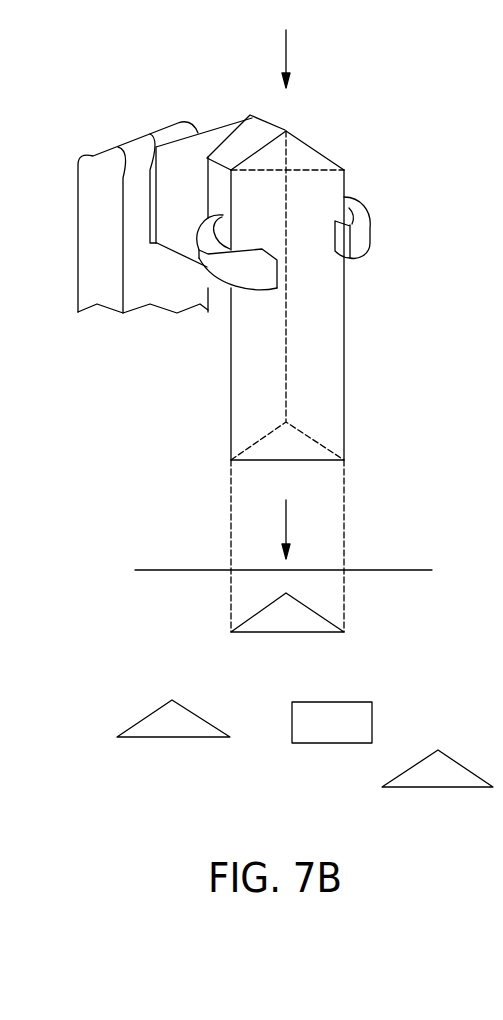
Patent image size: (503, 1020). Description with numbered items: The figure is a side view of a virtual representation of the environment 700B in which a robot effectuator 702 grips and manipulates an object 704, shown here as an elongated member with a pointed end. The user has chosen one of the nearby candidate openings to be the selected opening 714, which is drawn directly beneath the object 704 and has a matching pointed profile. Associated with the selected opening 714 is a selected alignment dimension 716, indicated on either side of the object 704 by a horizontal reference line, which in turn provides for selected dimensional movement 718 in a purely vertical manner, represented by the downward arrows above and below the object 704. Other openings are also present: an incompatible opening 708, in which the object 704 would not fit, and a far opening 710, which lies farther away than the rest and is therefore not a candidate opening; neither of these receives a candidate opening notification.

The environment 700B is at (366, 137).
The robot effectuator 702 is at (217, 128).
The object 704 is at (344, 313).
The incompatible opening 708 is at (327, 744).
The far opening 710 is at (172, 738).
The selected opening 714 is at (288, 633).
The selected alignment dimension 716 is at (231, 548).
The selected dimensional movement 718 is at (286, 53).